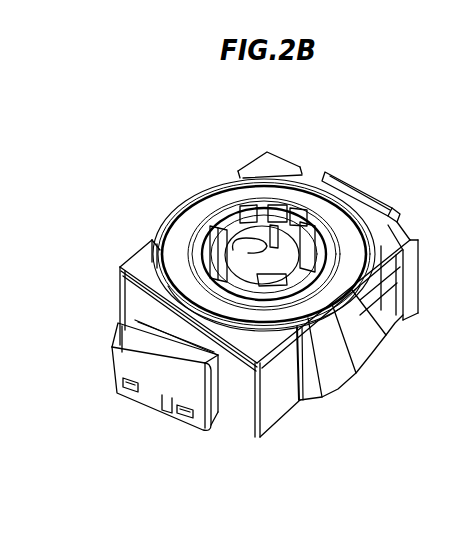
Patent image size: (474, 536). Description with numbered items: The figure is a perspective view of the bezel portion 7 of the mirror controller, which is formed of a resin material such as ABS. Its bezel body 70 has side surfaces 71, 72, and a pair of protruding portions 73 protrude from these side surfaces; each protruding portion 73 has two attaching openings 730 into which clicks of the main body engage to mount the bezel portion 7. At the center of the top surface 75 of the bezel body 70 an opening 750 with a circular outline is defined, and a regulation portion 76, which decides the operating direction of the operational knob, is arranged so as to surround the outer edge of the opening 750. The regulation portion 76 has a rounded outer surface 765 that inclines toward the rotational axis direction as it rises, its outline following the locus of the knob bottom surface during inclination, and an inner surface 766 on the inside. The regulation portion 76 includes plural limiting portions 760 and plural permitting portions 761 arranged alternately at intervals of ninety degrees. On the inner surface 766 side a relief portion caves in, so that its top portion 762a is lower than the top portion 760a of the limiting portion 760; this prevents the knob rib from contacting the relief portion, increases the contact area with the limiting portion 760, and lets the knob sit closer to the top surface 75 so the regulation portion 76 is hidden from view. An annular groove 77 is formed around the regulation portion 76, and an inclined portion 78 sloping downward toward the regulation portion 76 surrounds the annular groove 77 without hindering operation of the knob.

The bezel portion 7 is at (426, 158).
The bezel body 70 is at (282, 410).
The side surface 71 is at (133, 290).
The side surface 72 is at (281, 160).
The protruding portion 73 is at (397, 210).
The attaching opening 730 is at (176, 416).
The top surface 75 is at (140, 260).
The regulation portion 76 is at (391, 112).
The opening 750 is at (196, 215).
The limiting portion 760 is at (302, 174).
The top portion 760a is at (276, 300).
The permitting portion 761 is at (340, 190).
The top portion 762a is at (189, 262).
The outer surface 765 is at (268, 312).
The inner surface 766 is at (250, 202).
The annular groove 77 is at (303, 315).
The inclined portion 78 is at (336, 318).